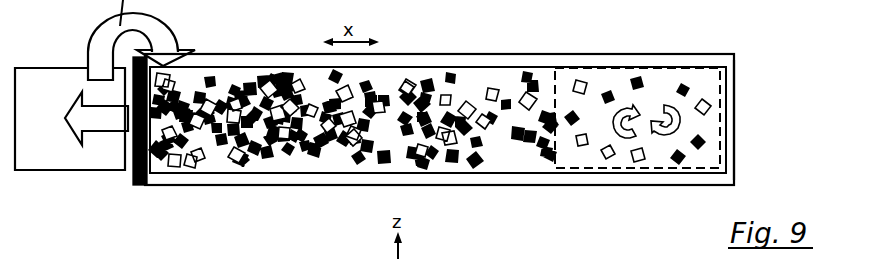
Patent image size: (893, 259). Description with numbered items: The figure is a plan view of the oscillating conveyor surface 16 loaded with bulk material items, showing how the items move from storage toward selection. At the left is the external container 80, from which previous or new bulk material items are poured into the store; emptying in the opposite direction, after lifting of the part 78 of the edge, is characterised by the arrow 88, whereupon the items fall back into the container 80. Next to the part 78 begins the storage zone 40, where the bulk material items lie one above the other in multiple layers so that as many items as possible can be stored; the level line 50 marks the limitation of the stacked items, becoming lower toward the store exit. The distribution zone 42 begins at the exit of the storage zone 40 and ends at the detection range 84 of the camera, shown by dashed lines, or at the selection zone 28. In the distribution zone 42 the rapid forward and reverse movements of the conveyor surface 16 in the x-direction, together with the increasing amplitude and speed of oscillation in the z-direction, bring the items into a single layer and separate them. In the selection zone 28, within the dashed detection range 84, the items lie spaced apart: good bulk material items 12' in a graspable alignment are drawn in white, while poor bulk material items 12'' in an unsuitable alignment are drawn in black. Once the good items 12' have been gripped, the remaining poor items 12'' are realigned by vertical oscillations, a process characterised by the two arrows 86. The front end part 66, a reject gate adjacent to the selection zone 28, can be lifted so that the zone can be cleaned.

The external container 80 is at (60, 162).
The emptying arrow 88 is at (107, 120).
The part of the edge 78 is at (143, 182).
The oscillating conveyor surface 16 is at (185, 170).
The selection zone 28 is at (265, 62).
The level line 50 is at (438, 163).
The detection zone 84 is at (588, 65).
The realignment arrows 86 is at (640, 105).
The front end part 66 is at (722, 82).
The good bulk material items 12' is at (748, 112).
The poor bulk material items 12'' is at (749, 140).
The storage zone 40 is at (245, 237).
The distribution zone 42 is at (453, 240).